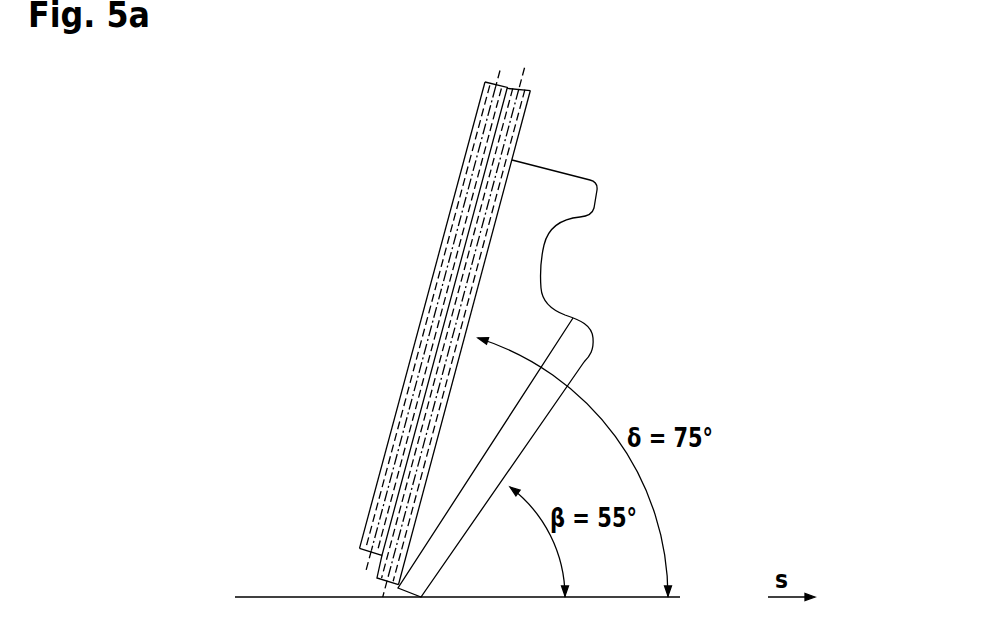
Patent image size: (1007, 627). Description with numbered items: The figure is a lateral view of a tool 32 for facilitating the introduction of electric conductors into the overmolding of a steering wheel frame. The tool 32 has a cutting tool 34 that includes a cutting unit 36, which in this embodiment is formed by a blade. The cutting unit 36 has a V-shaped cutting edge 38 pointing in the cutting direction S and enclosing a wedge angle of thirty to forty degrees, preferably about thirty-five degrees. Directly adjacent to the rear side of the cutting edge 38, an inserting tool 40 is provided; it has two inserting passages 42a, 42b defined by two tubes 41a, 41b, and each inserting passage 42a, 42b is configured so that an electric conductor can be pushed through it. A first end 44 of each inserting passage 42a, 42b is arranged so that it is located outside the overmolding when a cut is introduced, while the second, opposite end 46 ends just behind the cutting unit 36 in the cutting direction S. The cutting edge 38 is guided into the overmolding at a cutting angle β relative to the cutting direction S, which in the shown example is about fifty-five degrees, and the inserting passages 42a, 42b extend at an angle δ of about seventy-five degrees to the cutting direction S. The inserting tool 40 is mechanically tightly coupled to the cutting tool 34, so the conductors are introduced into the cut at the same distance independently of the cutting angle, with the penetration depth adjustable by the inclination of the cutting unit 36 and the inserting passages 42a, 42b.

The tool 32 is at (352, 150).
The cutting tool 34 is at (568, 195).
The cutting unit 36 is at (575, 345).
The cutting edge 38 is at (462, 537).
The inserting tool 40 is at (416, 332).
The tube 41a is at (453, 335).
The tube 41b is at (433, 318).
The inserting passage 42a is at (464, 338).
The inserting passage 42b is at (422, 315).
The first end 44 is at (487, 82).
The second end 46 is at (360, 555).